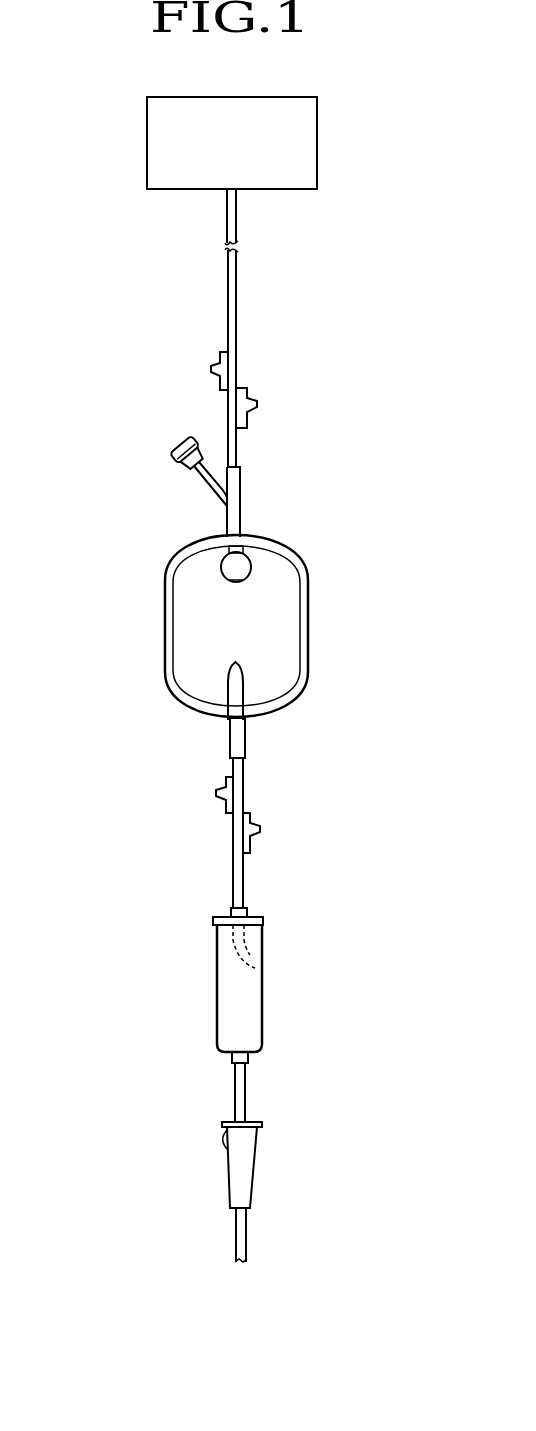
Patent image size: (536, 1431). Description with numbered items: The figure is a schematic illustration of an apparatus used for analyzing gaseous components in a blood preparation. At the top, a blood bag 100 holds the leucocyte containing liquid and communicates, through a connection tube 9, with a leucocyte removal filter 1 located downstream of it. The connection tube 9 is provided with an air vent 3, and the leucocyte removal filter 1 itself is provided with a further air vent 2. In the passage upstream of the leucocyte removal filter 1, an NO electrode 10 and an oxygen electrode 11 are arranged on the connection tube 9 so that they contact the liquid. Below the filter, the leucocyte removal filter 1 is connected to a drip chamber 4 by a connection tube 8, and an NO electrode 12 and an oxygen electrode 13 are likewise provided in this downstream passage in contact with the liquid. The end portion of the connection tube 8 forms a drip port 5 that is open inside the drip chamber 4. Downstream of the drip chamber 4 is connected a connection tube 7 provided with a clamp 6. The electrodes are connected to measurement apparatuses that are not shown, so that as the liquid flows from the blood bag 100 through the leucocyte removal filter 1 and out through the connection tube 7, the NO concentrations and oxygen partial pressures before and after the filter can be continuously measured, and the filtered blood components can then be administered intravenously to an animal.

The blood bag 100 is at (317, 150).
The connection tube 9 is at (237, 306).
The NO electrode 10 is at (213, 366).
The oxygen electrode 11 is at (248, 401).
The air vent 3 is at (172, 453).
The leucocyte removal filter 1 is at (163, 615).
The air vent 2 is at (271, 543).
The connection tube 8 is at (233, 873).
The NO electrode 12 is at (223, 790).
The oxygen electrode 13 is at (258, 828).
The drip chamber 4 is at (226, 984).
The drip port 5 is at (258, 968).
The connection tube 7 is at (246, 1096).
The clamp 6 is at (248, 1186).